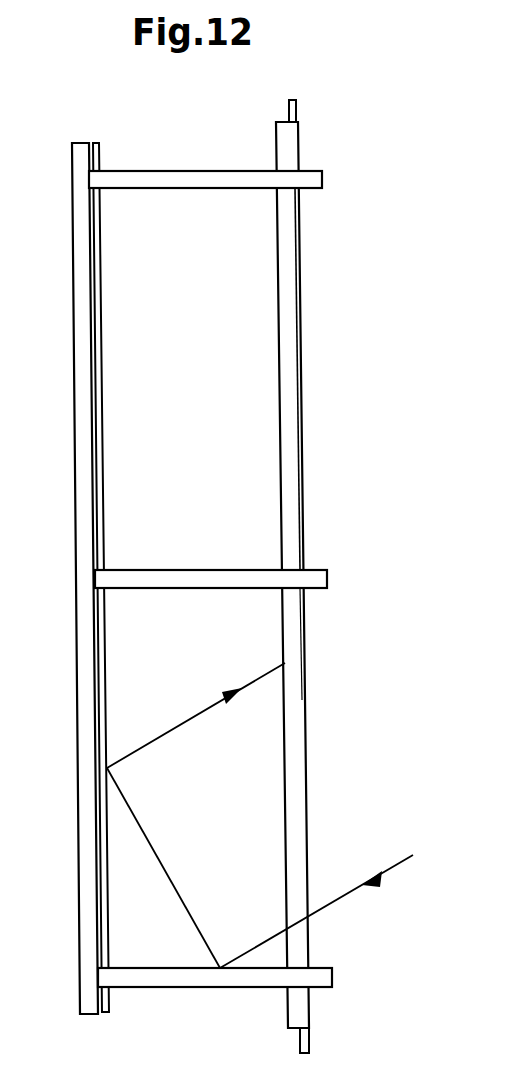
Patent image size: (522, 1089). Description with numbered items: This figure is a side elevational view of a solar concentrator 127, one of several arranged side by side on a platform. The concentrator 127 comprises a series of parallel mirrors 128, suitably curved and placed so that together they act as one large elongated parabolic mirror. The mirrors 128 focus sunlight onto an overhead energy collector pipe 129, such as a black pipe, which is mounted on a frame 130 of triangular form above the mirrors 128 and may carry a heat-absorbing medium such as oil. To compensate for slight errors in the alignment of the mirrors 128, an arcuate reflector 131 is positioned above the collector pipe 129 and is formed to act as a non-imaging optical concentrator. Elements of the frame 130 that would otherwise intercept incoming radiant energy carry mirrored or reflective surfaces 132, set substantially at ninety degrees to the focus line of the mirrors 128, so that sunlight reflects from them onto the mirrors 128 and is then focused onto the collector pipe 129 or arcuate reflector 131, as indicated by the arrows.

The solar concentrator 127 is at (316, 292).
The mirror 128 is at (109, 1006).
The energy collector pipe 129 is at (297, 108).
The frame 130 is at (177, 166).
The arcuate reflector 131 is at (298, 765).
The reflective surface 132 is at (262, 569).